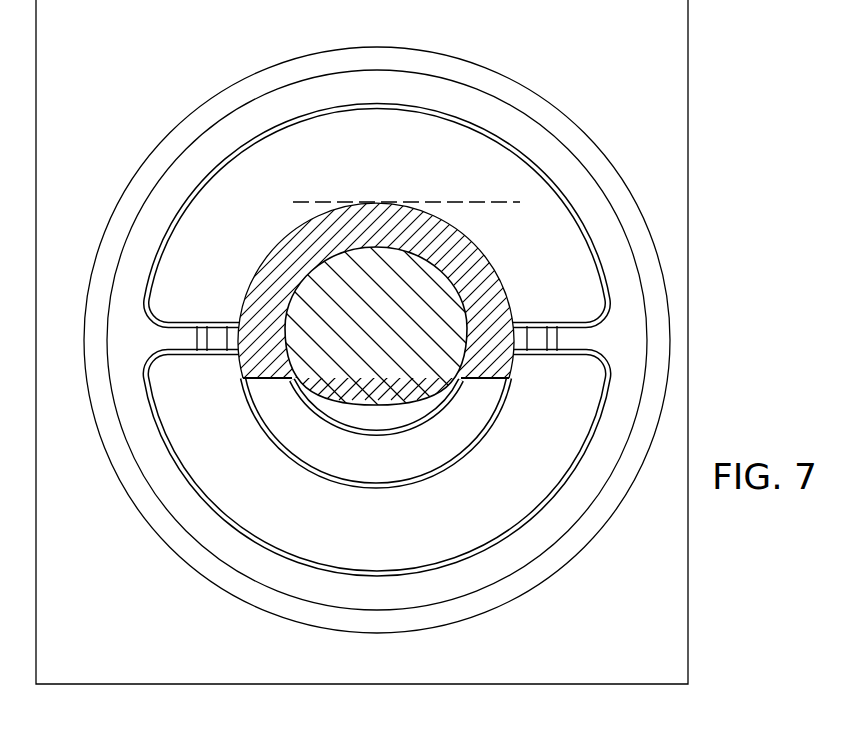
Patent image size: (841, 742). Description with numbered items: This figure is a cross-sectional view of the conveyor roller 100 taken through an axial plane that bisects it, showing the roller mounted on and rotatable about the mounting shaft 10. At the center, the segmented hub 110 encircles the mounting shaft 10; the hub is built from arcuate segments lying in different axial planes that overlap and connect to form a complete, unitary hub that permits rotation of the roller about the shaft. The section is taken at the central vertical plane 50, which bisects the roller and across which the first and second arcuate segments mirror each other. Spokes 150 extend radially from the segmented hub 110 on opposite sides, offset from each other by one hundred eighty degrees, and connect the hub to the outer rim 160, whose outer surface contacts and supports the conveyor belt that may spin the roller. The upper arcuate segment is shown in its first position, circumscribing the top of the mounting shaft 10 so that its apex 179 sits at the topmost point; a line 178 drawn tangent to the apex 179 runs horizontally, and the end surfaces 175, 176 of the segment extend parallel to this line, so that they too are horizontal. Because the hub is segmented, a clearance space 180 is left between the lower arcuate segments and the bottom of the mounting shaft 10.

The mounting shaft 10 is at (331, 283).
The central vertical plane 50 is at (688, 188).
The conveyor roller 100 is at (584, 84).
The segmented hub 110 is at (258, 244).
The spokes 150 is at (172, 322).
The outer rim 160 is at (330, 50).
The end surface 175 is at (262, 382).
The end surface 176 is at (488, 381).
The line 178 is at (468, 198).
The apex 179 is at (376, 201).
The clearance space 180 is at (353, 410).